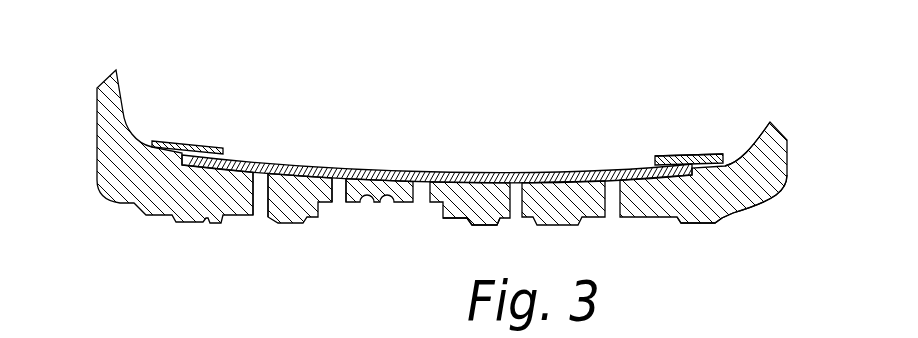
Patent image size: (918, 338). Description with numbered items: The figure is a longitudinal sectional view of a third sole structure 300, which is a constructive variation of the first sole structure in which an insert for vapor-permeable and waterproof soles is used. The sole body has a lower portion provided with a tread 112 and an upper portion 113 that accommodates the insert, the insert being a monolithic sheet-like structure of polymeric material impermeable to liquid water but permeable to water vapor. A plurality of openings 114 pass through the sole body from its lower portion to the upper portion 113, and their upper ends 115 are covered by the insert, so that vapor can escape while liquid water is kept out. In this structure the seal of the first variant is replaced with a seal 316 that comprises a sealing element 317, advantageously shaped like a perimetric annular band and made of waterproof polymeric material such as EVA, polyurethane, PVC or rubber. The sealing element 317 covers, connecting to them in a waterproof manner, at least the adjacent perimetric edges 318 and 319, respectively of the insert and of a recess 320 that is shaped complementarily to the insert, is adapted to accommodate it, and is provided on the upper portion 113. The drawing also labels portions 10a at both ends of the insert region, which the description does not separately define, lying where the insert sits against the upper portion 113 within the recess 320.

The third sole structure 300 is at (131, 242).
The tire bead seat flange portion 10a is at (208, 147).
The tread 112 is at (480, 226).
The upper portion 113 is at (745, 148).
The openings 114 is at (335, 205).
The upper ends 115 is at (296, 165).
The seal 316 is at (643, 161).
The sealing element 317 is at (700, 155).
The perimetric edge of the insert for soles 318 is at (665, 156).
The perimetric edge of the recess 319 is at (760, 207).
The recess 320 is at (645, 190).